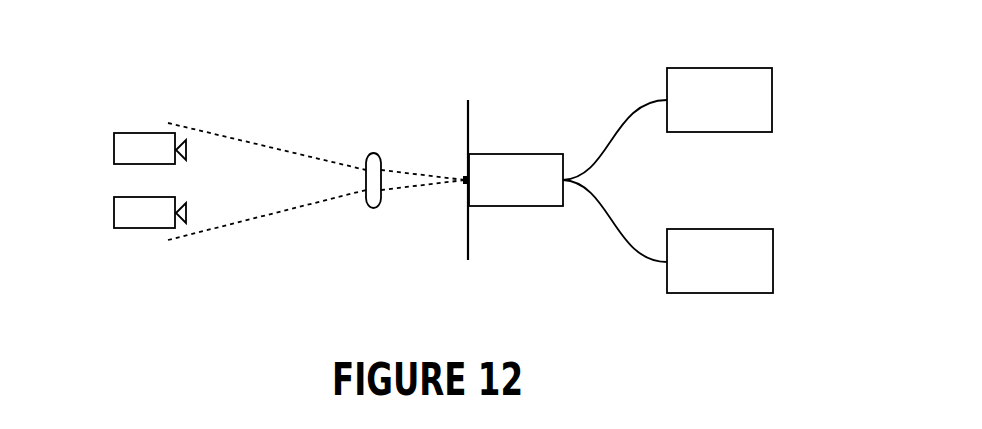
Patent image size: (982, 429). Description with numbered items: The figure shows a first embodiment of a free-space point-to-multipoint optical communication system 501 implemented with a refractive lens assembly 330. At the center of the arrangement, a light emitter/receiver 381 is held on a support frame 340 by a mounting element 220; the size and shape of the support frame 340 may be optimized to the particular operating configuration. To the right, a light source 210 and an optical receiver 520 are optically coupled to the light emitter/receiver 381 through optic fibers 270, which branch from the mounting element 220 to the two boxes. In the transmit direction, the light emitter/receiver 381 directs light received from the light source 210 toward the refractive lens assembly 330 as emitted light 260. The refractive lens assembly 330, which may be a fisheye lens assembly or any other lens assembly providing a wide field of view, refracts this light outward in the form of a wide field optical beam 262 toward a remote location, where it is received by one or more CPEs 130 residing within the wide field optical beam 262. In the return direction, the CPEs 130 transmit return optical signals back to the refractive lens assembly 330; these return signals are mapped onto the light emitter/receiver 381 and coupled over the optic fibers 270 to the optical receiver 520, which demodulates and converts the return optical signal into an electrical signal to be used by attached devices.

The FSPMO communication system 501 is at (243, 65).
The CPE 130 is at (114, 145).
The wide field optical beam 262 is at (285, 152).
The emitted light 260 is at (412, 177).
The refractive lens assembly 330 is at (369, 204).
The light emitter/receiver 381 is at (463, 188).
The mounting element 220 is at (532, 154).
The support frame 340 is at (470, 245).
The optic fibers 270 is at (639, 108).
The optical receiver 520 is at (773, 83).
The light source 210 is at (773, 244).